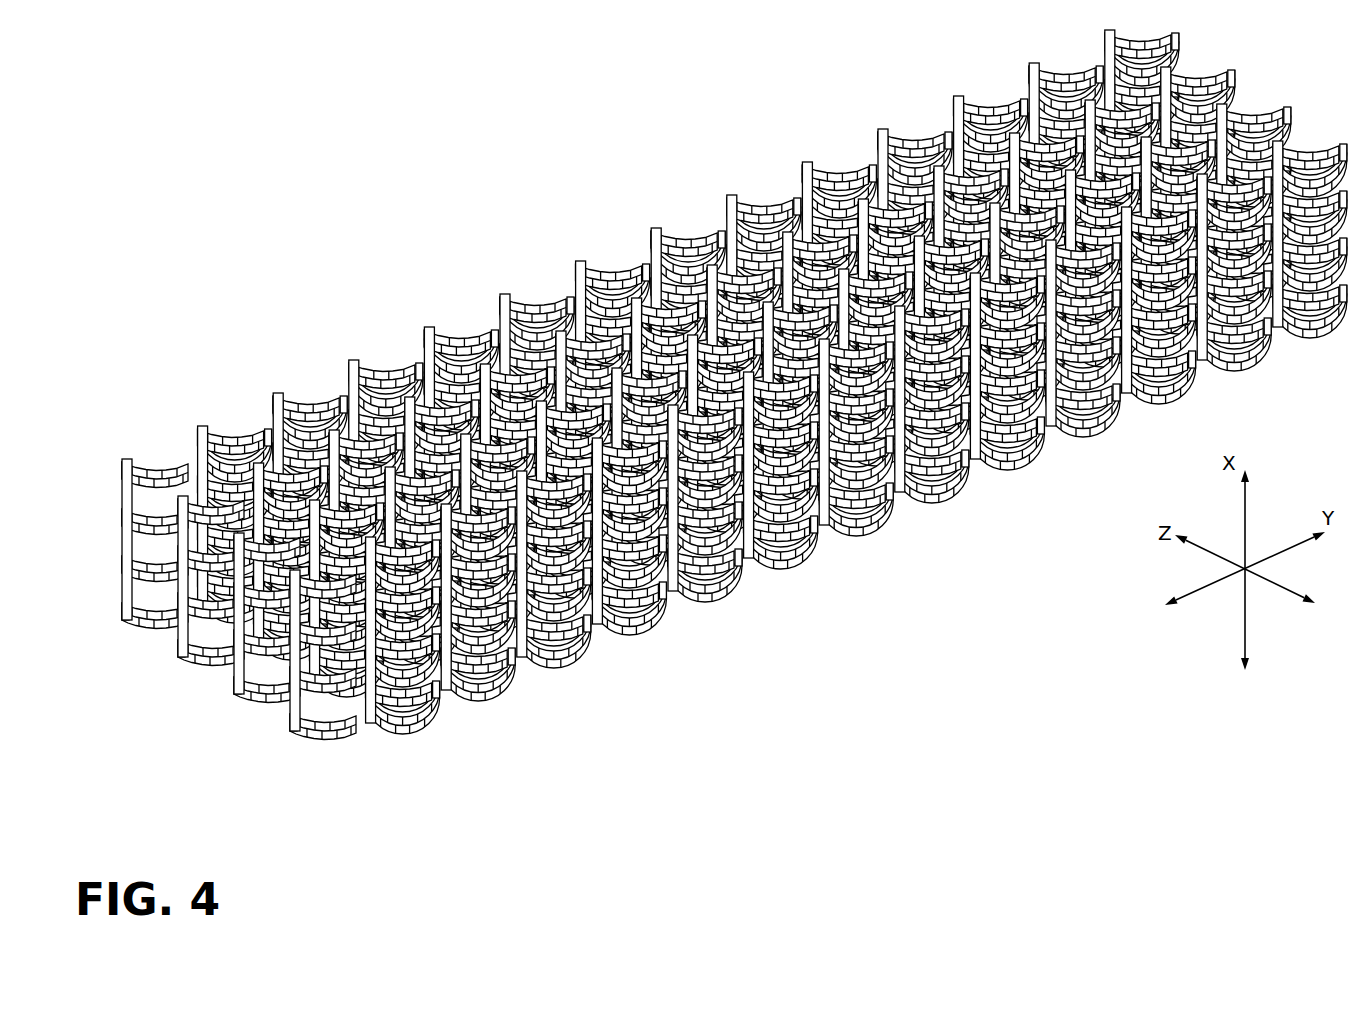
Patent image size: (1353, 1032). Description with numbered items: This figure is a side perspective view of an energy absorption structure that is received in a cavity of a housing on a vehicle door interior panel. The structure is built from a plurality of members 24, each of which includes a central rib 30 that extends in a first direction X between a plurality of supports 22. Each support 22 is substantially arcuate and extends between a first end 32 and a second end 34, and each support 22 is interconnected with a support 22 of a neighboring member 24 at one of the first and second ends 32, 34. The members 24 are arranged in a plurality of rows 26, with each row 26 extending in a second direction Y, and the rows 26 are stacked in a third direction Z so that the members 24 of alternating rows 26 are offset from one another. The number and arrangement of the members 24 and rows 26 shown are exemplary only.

The support 22 is at (699, 385).
The member 24 is at (209, 463).
The row 26 is at (643, 381).
The rib 30 is at (122, 557).
The first end 32 is at (121, 469).
The second end 34 is at (177, 476).